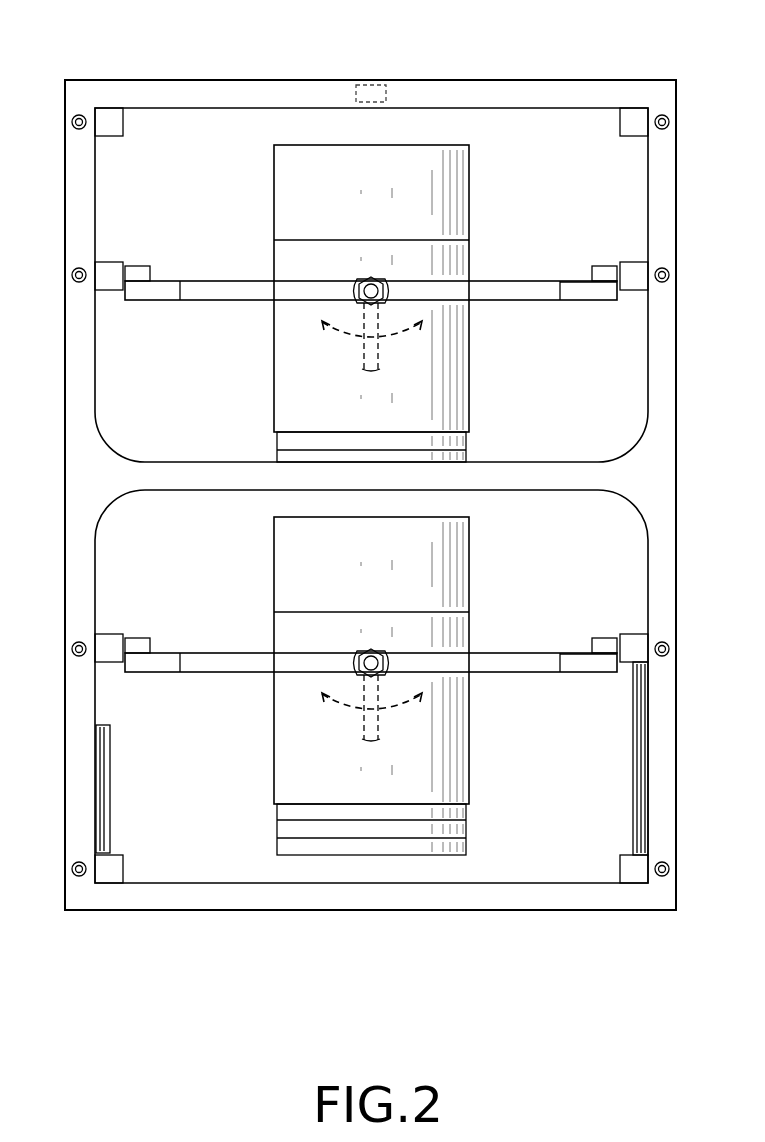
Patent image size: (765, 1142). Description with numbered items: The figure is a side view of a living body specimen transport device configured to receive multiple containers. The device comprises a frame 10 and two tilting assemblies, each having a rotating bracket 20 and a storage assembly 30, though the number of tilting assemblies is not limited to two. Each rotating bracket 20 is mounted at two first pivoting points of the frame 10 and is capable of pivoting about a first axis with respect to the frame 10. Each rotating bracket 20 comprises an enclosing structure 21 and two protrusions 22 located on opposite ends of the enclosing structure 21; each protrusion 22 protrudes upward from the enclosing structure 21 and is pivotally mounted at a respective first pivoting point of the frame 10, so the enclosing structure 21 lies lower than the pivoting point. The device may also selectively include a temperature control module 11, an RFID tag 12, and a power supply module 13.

The frame 10 is at (176, 70).
The temperature control module 11 is at (106, 812).
The RFID tag 12 is at (372, 98).
The power supply module 13 is at (637, 780).
The rotating bracket 20 is at (220, 272).
The enclosing structure 21 is at (512, 293).
The protrusion 22 is at (606, 272).
The storage assembly 30 is at (262, 370).